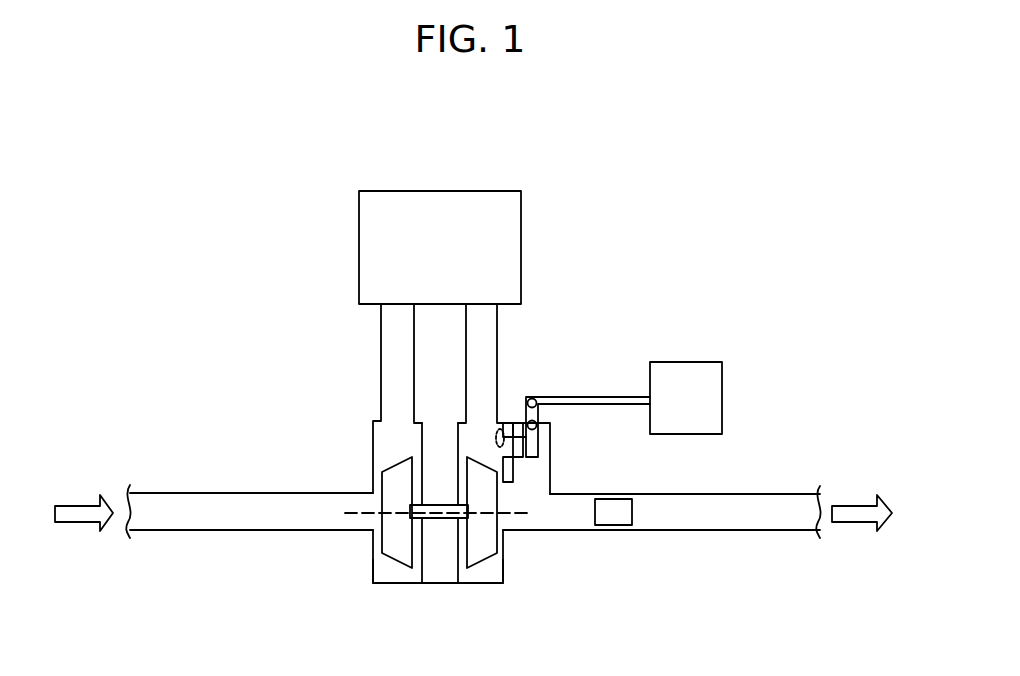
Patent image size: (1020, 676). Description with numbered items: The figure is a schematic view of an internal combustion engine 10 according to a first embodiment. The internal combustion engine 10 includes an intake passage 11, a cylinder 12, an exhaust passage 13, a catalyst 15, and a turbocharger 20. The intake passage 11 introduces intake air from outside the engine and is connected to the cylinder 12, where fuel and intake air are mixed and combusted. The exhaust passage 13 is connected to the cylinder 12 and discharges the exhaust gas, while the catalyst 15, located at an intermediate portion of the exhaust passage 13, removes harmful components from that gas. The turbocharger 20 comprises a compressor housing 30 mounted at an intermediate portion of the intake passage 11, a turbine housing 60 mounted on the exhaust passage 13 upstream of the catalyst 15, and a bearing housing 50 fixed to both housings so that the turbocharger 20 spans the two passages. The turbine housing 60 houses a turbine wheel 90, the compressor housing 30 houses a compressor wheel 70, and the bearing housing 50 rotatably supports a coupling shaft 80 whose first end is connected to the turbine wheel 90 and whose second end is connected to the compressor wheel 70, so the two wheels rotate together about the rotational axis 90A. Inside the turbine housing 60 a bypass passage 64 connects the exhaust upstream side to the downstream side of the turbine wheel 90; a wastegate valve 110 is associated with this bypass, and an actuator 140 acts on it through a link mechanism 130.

The internal combustion engine 10 is at (246, 222).
The intake passage 11 is at (381, 332).
The cylinder 12 is at (466, 191).
The exhaust passage 13 is at (497, 322).
The catalyst 15 is at (614, 526).
The turbocharger 20 is at (352, 555).
The compressor housing 30 is at (375, 584).
The bearing housing 50 is at (432, 585).
The turbine housing 60 is at (488, 585).
The bypass passage 64 is at (498, 432).
The compressor wheel 70 is at (397, 566).
The coupling shaft 80 is at (440, 522).
The turbine wheel 90 is at (492, 560).
The rotational axis 90A is at (530, 515).
The wastegate valve 110 is at (523, 472).
The link mechanism 130 is at (594, 397).
The actuator 140 is at (678, 362).